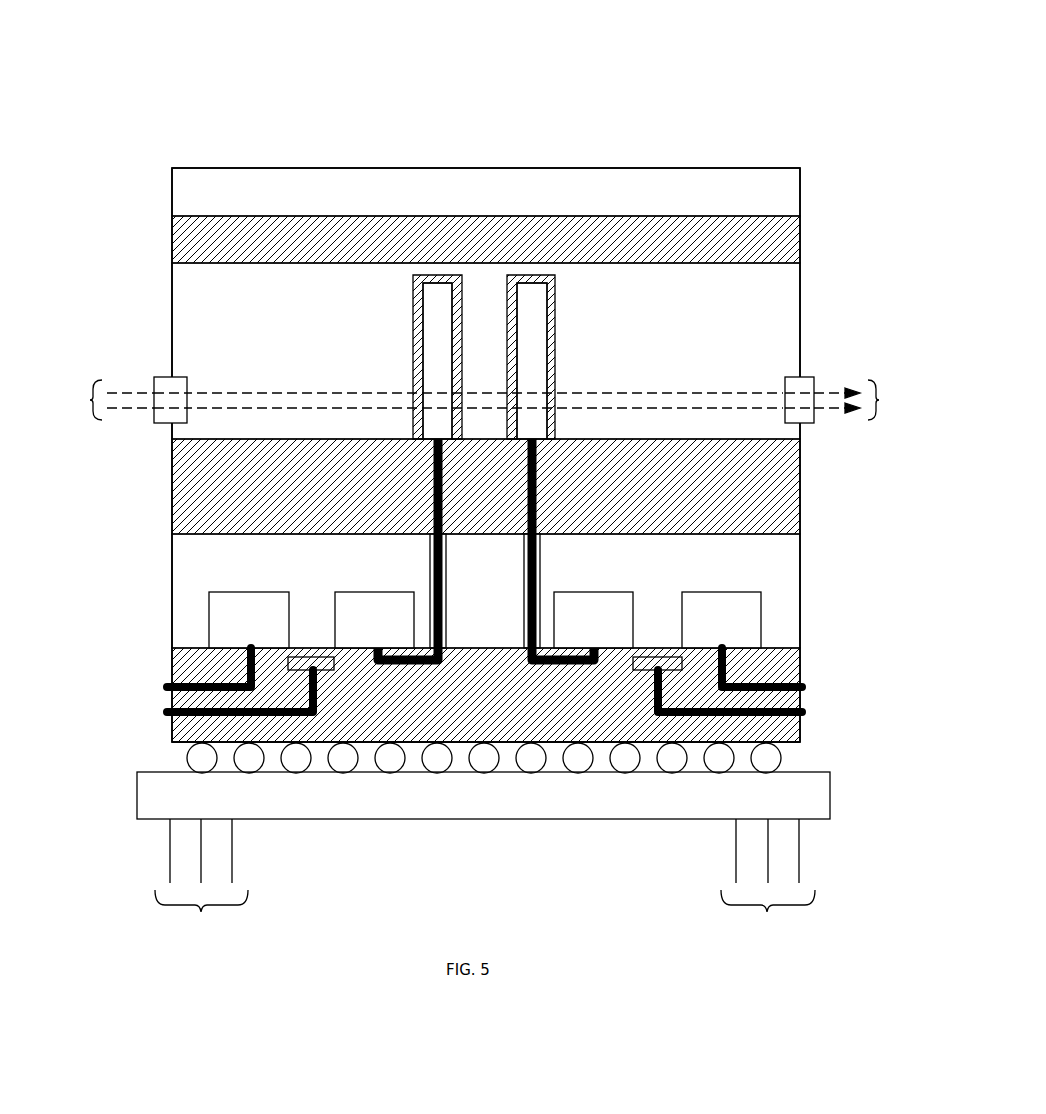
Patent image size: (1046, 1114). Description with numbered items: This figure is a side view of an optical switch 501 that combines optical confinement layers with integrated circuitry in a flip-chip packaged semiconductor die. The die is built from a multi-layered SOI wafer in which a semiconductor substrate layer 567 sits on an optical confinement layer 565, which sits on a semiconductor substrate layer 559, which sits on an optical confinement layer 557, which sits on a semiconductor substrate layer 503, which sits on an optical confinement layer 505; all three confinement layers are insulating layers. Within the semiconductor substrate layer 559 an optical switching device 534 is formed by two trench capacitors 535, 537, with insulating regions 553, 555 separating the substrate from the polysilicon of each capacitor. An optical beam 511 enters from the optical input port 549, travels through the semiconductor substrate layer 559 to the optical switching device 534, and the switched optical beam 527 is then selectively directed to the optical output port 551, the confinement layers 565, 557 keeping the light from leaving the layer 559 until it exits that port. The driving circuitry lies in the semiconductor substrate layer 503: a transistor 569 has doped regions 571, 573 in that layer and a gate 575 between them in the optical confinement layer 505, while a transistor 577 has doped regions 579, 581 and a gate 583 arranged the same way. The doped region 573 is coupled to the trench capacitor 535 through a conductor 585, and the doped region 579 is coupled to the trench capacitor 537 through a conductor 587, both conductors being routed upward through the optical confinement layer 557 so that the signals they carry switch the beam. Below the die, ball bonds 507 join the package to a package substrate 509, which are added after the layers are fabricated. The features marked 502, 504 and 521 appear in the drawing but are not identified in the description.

The optical switch 501 is at (775, 53).
The optical chip 502 is at (738, 168).
The semiconductor substrate layer 503 is at (793, 567).
The bottom surface 504 is at (800, 742).
The optical confinement layer 505 is at (793, 670).
The ball bonds 507 is at (530, 765).
The package substrate 509 is at (830, 797).
The optical beam 511 is at (418, 400).
The pins 521 is at (485, 875).
The switched optical beam 527 is at (864, 400).
The optical switching device 534 is at (521, 355).
The trench capacitor 535 is at (438, 377).
The trench capacitor 537 is at (532, 377).
The optical input port 549 is at (168, 377).
The optical output port 551 is at (803, 377).
The insulating region 553 is at (462, 335).
The insulating region 555 is at (555, 335).
The optical confinement layer 557 is at (793, 483).
The semiconductor substrate layer 559 is at (793, 309).
The optical confinement layer 565 is at (793, 237).
The semiconductor substrate layer 567 is at (793, 190).
The transistor 569 is at (290, 630).
The doped region 571 is at (236, 592).
The doped region 573 is at (361, 592).
The gate 575 is at (320, 673).
The transistor 577 is at (678, 630).
The doped region 579 is at (588, 592).
The doped region 581 is at (716, 592).
The gate 583 is at (640, 670).
The conductor 585 is at (424, 481).
The conductor 587 is at (540, 470).